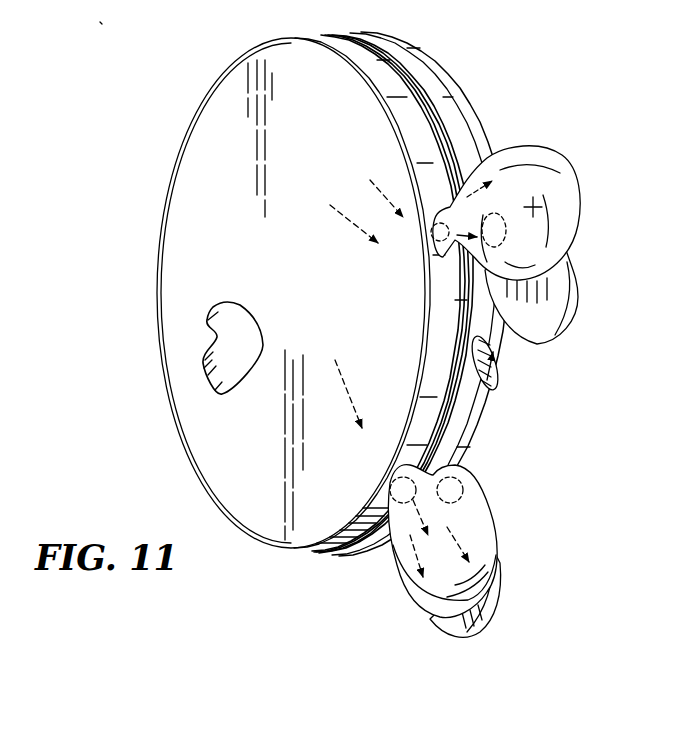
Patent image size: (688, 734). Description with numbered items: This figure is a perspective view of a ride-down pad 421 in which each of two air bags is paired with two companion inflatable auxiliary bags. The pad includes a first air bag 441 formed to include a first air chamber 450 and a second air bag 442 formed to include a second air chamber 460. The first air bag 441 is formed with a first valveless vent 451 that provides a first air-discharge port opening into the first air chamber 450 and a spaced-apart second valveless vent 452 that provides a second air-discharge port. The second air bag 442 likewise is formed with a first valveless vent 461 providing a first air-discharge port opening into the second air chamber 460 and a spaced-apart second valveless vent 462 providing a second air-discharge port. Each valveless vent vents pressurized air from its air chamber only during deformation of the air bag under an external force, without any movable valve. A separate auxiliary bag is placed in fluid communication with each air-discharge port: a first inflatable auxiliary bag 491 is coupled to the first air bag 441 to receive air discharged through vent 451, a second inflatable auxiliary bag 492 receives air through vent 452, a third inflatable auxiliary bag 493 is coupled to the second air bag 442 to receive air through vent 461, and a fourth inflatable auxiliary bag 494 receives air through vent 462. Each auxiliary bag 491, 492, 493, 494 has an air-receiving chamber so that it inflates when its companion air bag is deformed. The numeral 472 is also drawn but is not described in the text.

The ride-down pad 421 is at (494, 86).
The first air bag 441 is at (434, 50).
The second air bag 442 is at (300, 70).
The first air chamber 450 is at (485, 388).
The first valveless vent 451 is at (462, 493).
The second valveless vent 452 is at (457, 240).
The second air chamber 460 is at (236, 333).
The first valveless vent 461 is at (390, 483).
The second valveless vent 462 is at (433, 247).
The air inlet 472 is at (87, 12).
The first inflatable auxiliary bag 491 is at (499, 620).
The second inflatable auxiliary bag 492 is at (581, 286).
The third inflatable auxiliary bag 493 is at (391, 583).
The fourth inflatable auxiliary bag 494 is at (529, 138).